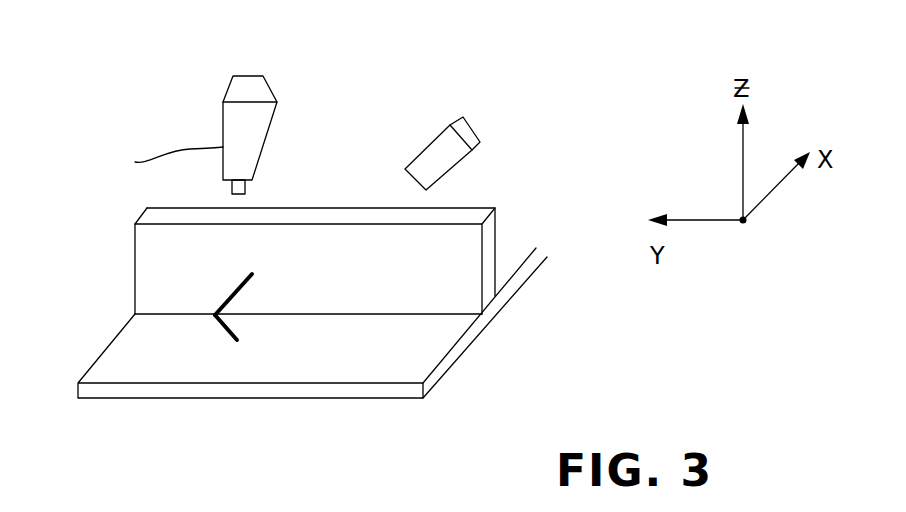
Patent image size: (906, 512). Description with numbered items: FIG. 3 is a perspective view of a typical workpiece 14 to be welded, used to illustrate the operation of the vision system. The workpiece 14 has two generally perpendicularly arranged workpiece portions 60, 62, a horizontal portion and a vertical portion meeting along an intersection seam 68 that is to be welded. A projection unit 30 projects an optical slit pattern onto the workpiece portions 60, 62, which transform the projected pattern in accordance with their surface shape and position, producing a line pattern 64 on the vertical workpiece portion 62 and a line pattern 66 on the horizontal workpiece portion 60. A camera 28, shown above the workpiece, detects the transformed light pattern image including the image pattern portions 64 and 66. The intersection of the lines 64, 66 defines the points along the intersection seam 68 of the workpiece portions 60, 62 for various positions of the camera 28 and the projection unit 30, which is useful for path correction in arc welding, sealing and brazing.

The workpiece 14 is at (319, 318).
The camera 28 is at (277, 93).
The projection unit 30 is at (479, 131).
The workpiece portion 60 is at (428, 387).
The workpiece portion 62 is at (348, 260).
The line pattern 64 is at (230, 292).
The line pattern 66 is at (227, 332).
The intersection seam 68 is at (352, 313).